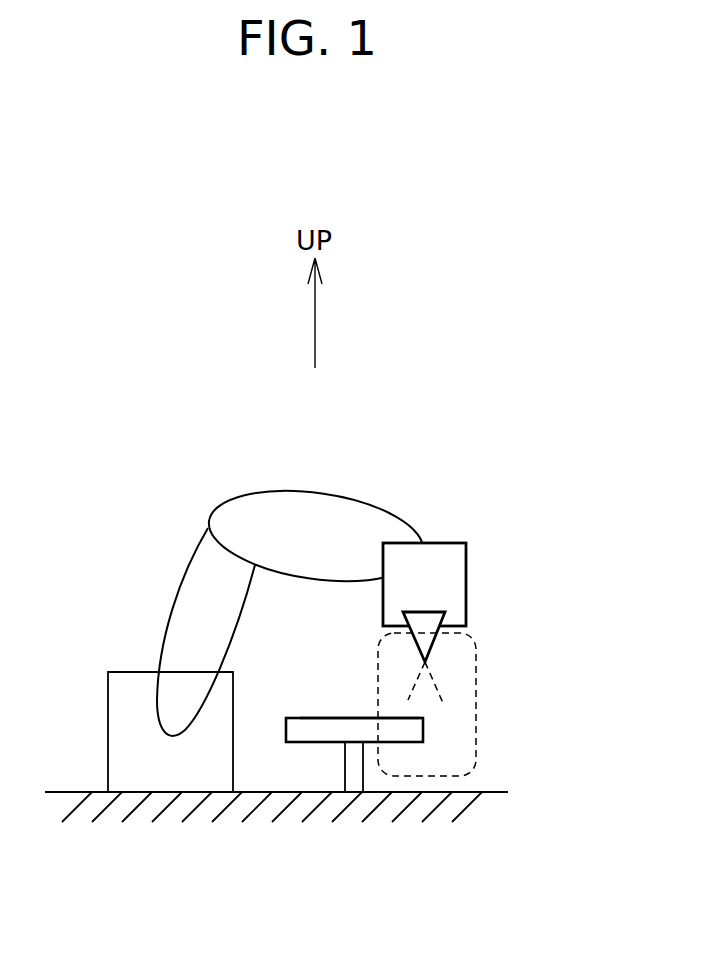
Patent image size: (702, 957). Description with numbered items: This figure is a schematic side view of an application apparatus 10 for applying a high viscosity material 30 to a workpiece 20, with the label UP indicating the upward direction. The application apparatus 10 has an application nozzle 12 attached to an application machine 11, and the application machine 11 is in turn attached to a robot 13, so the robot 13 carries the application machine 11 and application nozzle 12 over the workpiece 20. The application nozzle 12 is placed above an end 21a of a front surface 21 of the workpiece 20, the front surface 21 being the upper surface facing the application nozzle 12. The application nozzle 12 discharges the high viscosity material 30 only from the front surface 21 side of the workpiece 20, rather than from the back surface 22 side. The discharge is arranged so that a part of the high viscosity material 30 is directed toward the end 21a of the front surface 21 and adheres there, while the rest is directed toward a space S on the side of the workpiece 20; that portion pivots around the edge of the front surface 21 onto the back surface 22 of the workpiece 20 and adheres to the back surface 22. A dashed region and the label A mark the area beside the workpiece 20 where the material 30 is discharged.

The application apparatus 10 is at (337, 592).
The application machine 11 is at (447, 566).
The application nozzle 12 is at (427, 622).
The robot 13 is at (203, 601).
The workpiece 20 is at (344, 695).
The front surface 21 is at (342, 718).
The end 21a is at (417, 718).
The back surface 22 is at (330, 742).
The high viscosity material 30 is at (438, 686).
The work area A is at (478, 697).
The space S is at (442, 728).